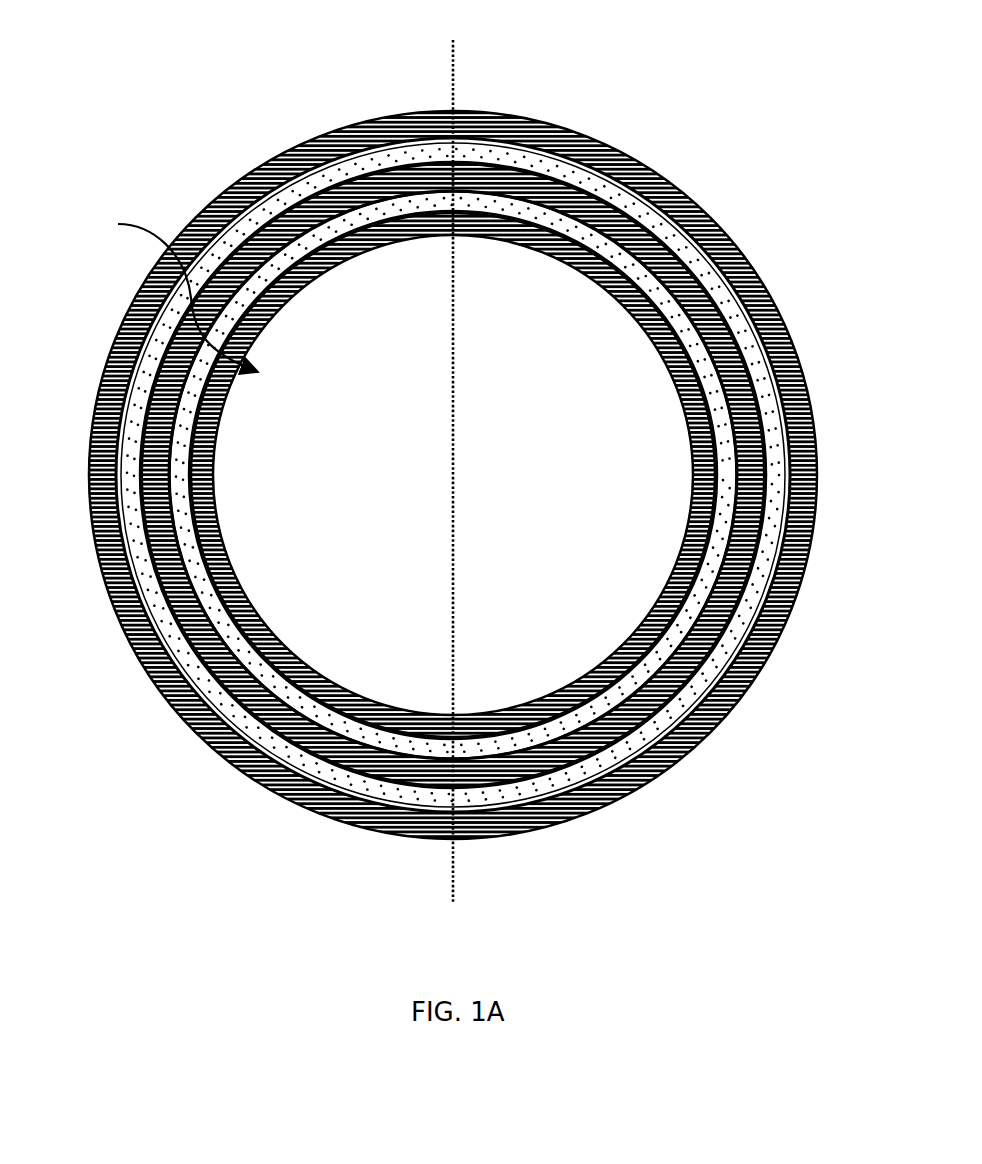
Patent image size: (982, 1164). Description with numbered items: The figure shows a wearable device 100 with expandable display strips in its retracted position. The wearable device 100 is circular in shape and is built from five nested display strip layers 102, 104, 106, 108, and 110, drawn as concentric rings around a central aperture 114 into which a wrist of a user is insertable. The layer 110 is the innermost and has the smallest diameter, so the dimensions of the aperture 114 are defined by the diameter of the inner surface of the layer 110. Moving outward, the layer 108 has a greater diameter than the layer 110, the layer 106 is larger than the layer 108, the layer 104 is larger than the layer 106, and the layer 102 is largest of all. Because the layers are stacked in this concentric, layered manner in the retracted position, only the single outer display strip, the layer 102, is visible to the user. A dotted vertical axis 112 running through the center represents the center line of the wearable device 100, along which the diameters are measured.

The wearable device 100 is at (130, 96).
The layer 102 is at (605, 146).
The layer 104 is at (638, 206).
The layer 106 is at (680, 262).
The layer 108 is at (727, 324).
The layer 110 is at (715, 397).
The vertical axis 112 is at (445, 861).
The aperture 114 is at (166, 293).